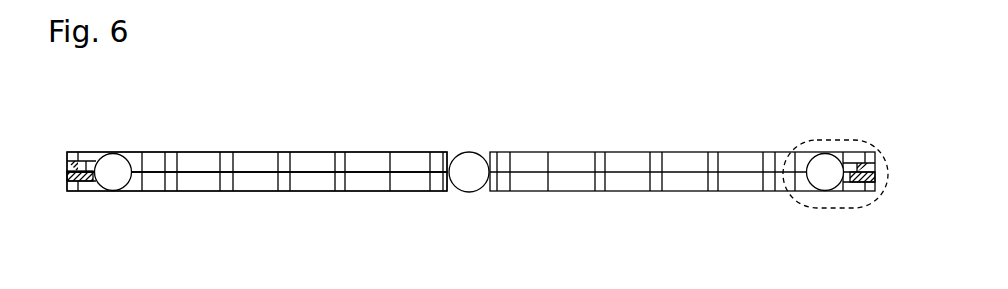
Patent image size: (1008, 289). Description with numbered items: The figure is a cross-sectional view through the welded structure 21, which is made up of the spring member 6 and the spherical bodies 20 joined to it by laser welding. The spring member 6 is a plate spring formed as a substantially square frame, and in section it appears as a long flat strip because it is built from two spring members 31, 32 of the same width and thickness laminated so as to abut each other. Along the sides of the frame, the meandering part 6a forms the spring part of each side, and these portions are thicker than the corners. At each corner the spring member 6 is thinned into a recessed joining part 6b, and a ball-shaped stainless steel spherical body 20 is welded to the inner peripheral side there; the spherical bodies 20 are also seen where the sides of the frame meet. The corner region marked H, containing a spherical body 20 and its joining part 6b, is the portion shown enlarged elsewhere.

The spring member 6 is at (471, 174).
The meandering part 6a is at (308, 152).
The joining part 6b is at (79, 182).
The spherical body 20 is at (113, 153).
The welded structure 21 is at (474, 145).
The spring member 31 is at (407, 152).
The spring member 32 is at (405, 192).
The H part H is at (793, 143).